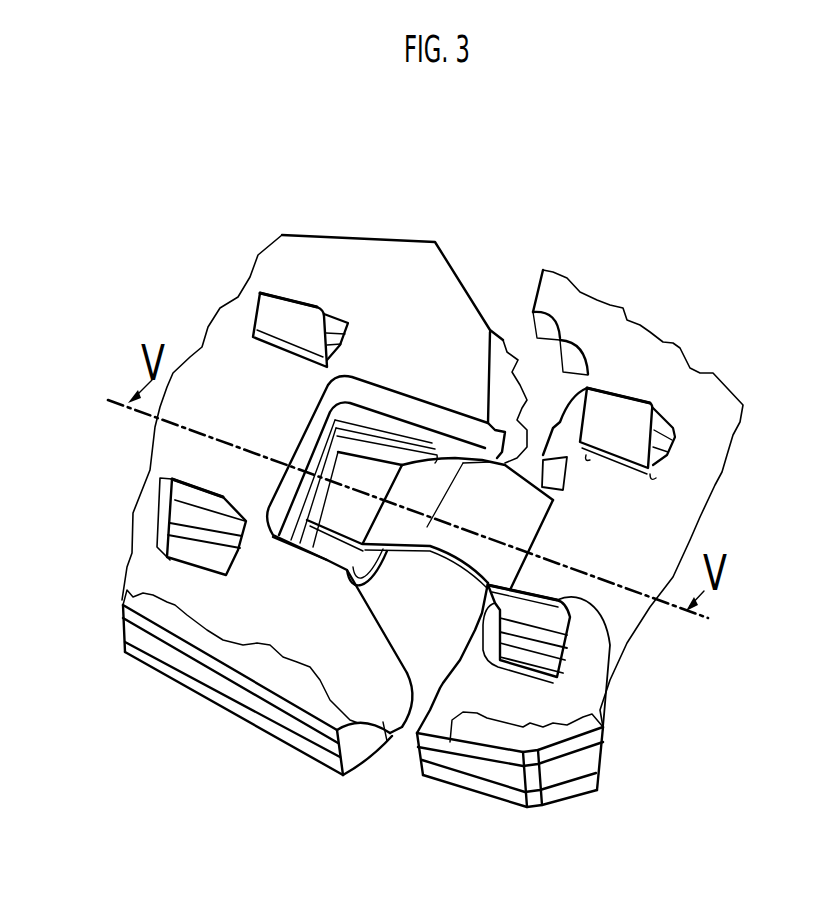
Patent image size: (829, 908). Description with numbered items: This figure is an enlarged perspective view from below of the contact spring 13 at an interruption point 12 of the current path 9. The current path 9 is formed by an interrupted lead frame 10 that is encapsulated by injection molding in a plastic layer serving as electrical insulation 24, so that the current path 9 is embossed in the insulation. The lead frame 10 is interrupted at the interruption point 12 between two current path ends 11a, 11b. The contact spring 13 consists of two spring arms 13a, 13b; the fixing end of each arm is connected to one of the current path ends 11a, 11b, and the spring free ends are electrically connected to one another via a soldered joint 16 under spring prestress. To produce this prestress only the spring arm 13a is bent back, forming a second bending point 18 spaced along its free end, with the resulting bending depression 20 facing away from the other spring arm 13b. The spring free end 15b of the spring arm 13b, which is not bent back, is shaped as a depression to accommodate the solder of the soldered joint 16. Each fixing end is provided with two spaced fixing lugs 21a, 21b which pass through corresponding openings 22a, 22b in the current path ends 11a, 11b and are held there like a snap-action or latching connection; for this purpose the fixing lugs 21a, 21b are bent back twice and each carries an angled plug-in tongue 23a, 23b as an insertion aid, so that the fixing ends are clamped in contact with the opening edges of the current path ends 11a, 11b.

The current path 9 is at (135, 568).
The lead frame 10 is at (383, 263).
The current path end 11a is at (367, 657).
The current path end 11b is at (472, 657).
The interruption point 12 is at (408, 724).
The contact spring 13 is at (381, 457).
The spring arm 13a is at (483, 497).
The spring arm 13b is at (365, 418).
The spring free end 15b is at (300, 537).
The soldered joint 16 is at (328, 540).
The second bending point 18 is at (390, 460).
The bending depression 20 is at (464, 398).
The fixing lug 21a is at (633, 428).
The fixing lug 21b is at (265, 317).
The opening 22a is at (663, 442).
The opening 22b is at (337, 323).
The plug-in tongue 23a is at (598, 418).
The plug-in tongue 23b is at (300, 330).
The electrical insulation 24 is at (248, 662).